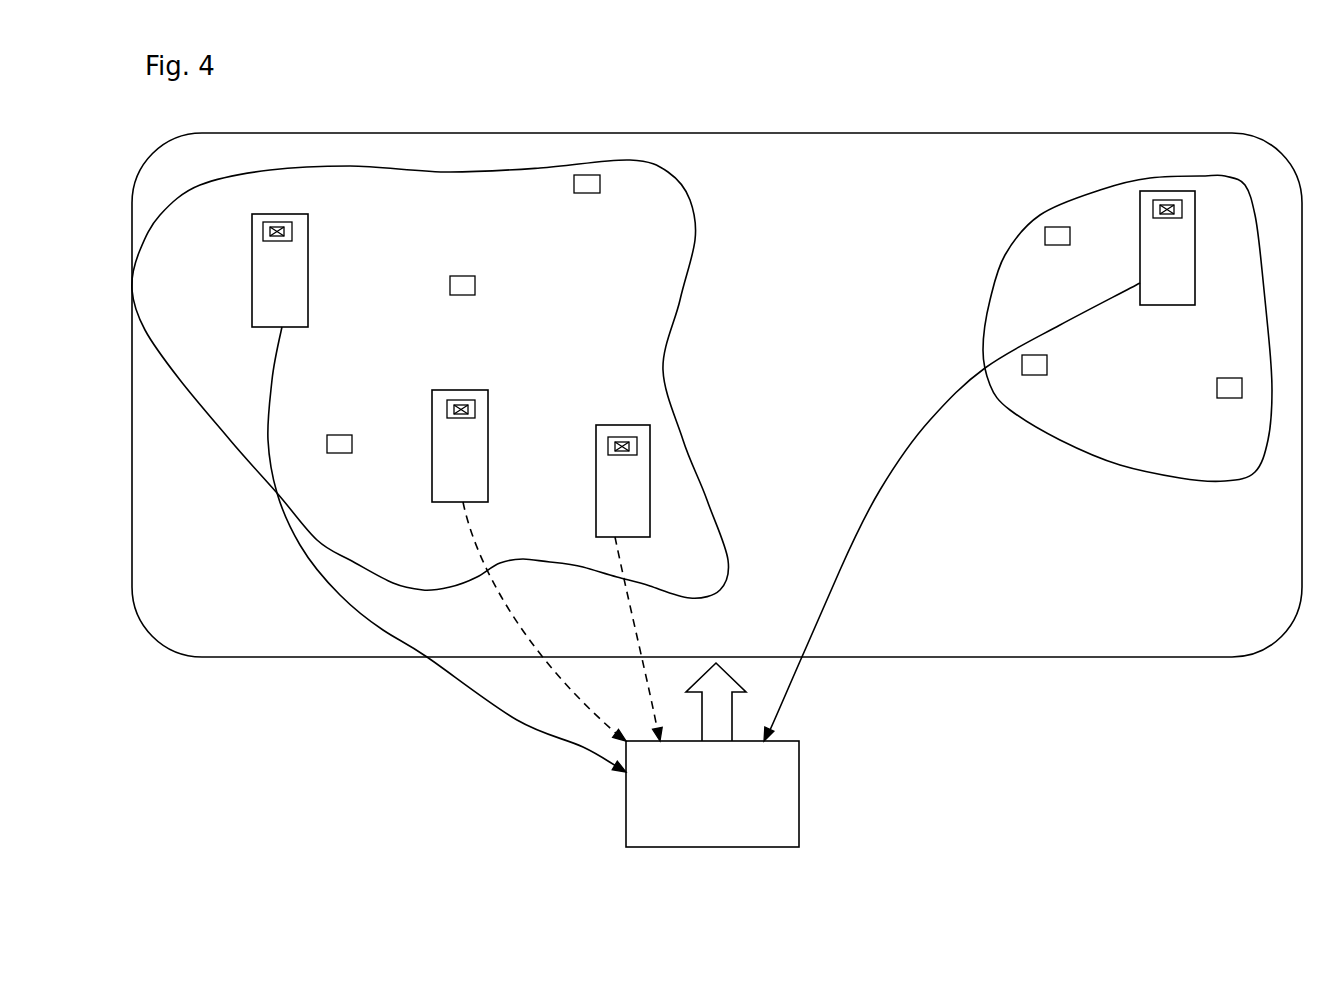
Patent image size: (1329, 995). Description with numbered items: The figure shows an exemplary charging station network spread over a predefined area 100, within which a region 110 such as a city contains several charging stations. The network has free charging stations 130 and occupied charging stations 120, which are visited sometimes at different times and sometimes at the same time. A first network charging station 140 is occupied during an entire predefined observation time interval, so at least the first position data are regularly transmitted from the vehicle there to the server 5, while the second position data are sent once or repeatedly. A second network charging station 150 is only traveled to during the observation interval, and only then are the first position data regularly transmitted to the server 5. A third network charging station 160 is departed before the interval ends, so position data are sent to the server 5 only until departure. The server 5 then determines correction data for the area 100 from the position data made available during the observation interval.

The server 5 is at (799, 807).
The area 100 is at (960, 135).
The region 110 is at (630, 160).
The occupied charging station 120 is at (381, 434).
The first network charging station 140 is at (258, 214).
The free charging station 130 is at (475, 277).
The second network charging station 150 is at (463, 390).
The third network charging station 160 is at (596, 443).